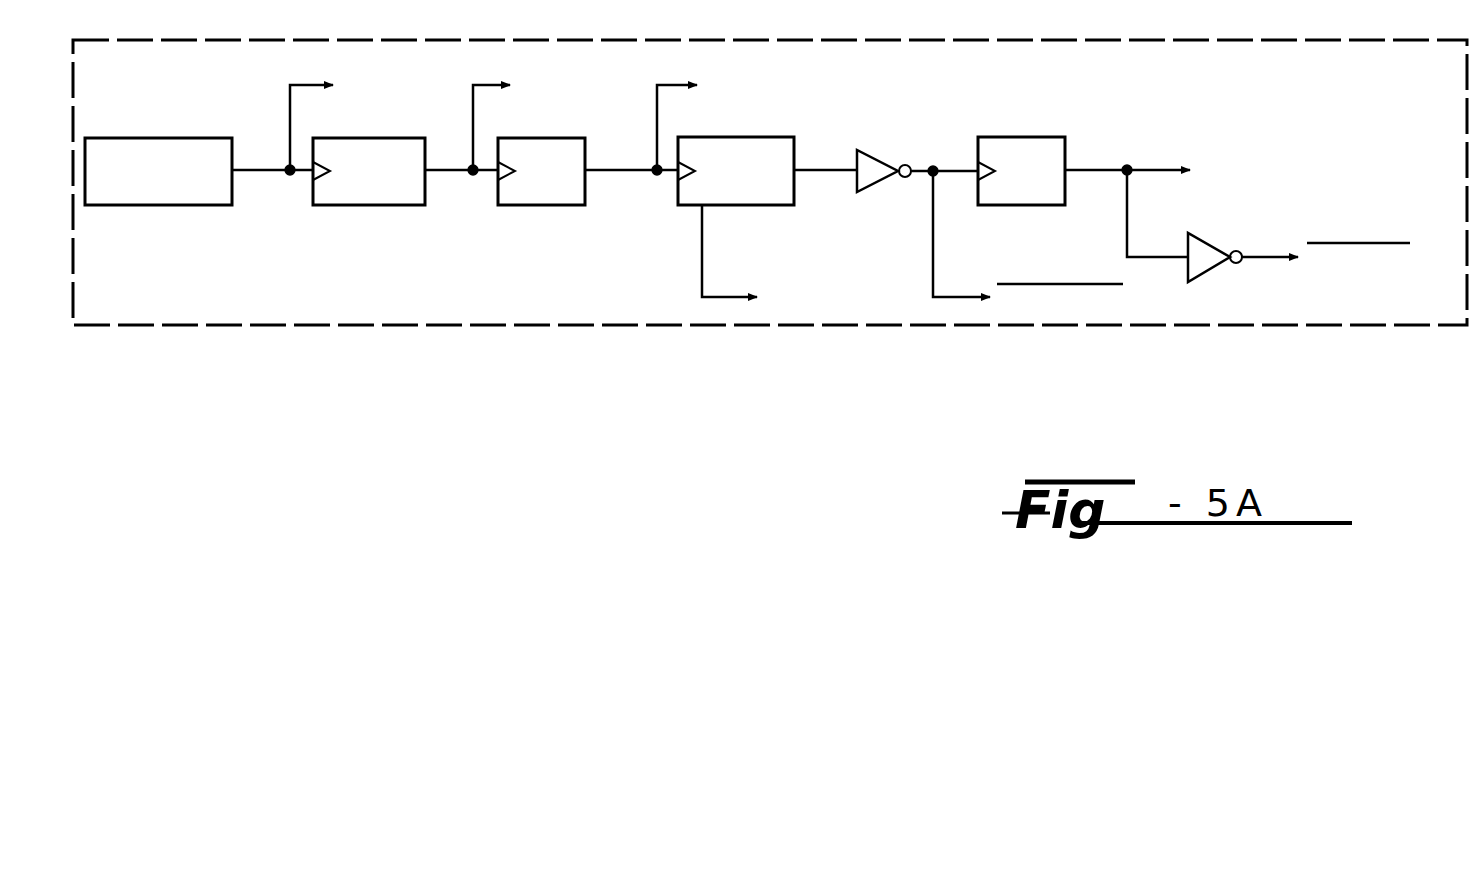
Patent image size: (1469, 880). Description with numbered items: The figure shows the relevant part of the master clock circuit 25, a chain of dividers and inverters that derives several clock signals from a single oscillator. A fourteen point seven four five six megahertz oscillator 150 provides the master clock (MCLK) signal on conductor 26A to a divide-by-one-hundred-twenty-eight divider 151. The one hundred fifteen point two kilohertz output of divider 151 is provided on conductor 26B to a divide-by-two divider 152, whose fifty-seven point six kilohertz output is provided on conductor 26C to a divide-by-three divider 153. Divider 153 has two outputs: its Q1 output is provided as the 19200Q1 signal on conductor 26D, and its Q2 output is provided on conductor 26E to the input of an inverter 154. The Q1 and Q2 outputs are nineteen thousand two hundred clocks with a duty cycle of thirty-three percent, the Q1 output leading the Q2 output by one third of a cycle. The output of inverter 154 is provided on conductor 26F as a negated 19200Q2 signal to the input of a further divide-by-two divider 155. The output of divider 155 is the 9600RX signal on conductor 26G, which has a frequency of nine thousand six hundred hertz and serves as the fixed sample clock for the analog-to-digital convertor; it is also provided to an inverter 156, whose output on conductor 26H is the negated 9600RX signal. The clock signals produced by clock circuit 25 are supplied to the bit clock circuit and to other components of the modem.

The master clock circuit 25 is at (1115, 40).
The 14.7456 megaHertz oscillator 150 is at (170, 137).
The divide-by-128 divider 151 is at (388, 137).
The divide-by-2 divider 152 is at (561, 137).
The divide-by-3 divider 153 is at (756, 137).
The inverter 154 is at (857, 150).
The divide-by-2 divider 155 is at (1001, 117).
The inverter 156 is at (1216, 236).
The conductor 26A is at (246, 173).
The conductor 26B is at (440, 173).
The conductor 26C is at (606, 173).
The conductor 26D is at (700, 261).
The conductor 26E is at (846, 131).
The conductor 26F is at (925, 168).
The conductor 26G is at (1093, 146).
The conductor 26H is at (1258, 256).